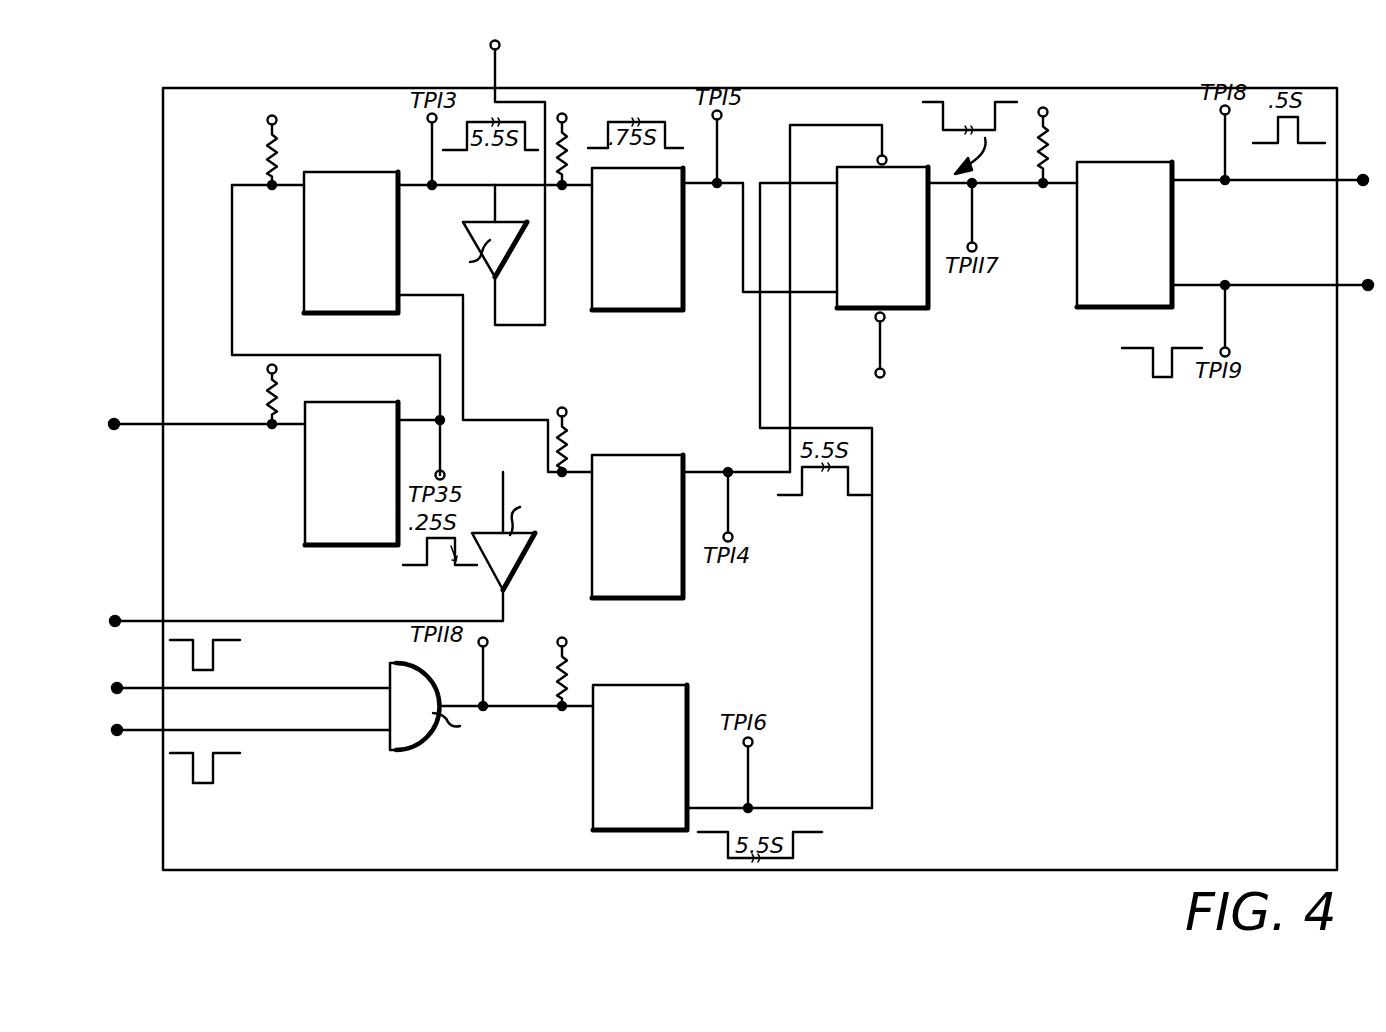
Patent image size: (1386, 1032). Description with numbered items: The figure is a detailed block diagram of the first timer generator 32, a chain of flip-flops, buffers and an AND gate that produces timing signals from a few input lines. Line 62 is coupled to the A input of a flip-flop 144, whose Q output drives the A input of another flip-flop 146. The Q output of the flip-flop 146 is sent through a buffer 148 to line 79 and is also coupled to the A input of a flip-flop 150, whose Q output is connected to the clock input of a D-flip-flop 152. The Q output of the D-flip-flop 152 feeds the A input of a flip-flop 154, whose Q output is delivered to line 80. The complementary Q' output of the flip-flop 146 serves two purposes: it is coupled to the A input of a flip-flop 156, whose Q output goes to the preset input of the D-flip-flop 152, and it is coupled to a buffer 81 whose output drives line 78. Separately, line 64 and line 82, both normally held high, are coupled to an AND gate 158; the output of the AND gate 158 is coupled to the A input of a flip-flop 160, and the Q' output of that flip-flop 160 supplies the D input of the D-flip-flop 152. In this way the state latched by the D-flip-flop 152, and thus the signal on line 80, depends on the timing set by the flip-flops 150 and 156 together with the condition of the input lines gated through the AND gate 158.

The first timer generator 32 is at (126, 468).
The line 62 is at (180, 424).
The line 64 is at (340, 688).
The line 78 is at (370, 621).
The line 79 is at (495, 70).
The line 80 is at (1283, 180).
The buffer 81 is at (518, 552).
The line 82 is at (268, 710).
The flip-flop 144 is at (330, 545).
The flip-flop 146 is at (304, 284).
The buffer 148 is at (475, 218).
The flip-flop 150 is at (665, 310).
The D-flip-flop 152 is at (912, 308).
The flip-flop 154 is at (1095, 307).
The flip-flop 156 is at (670, 598).
The AND gate 158 is at (428, 738).
The flip-flop 160 is at (593, 787).